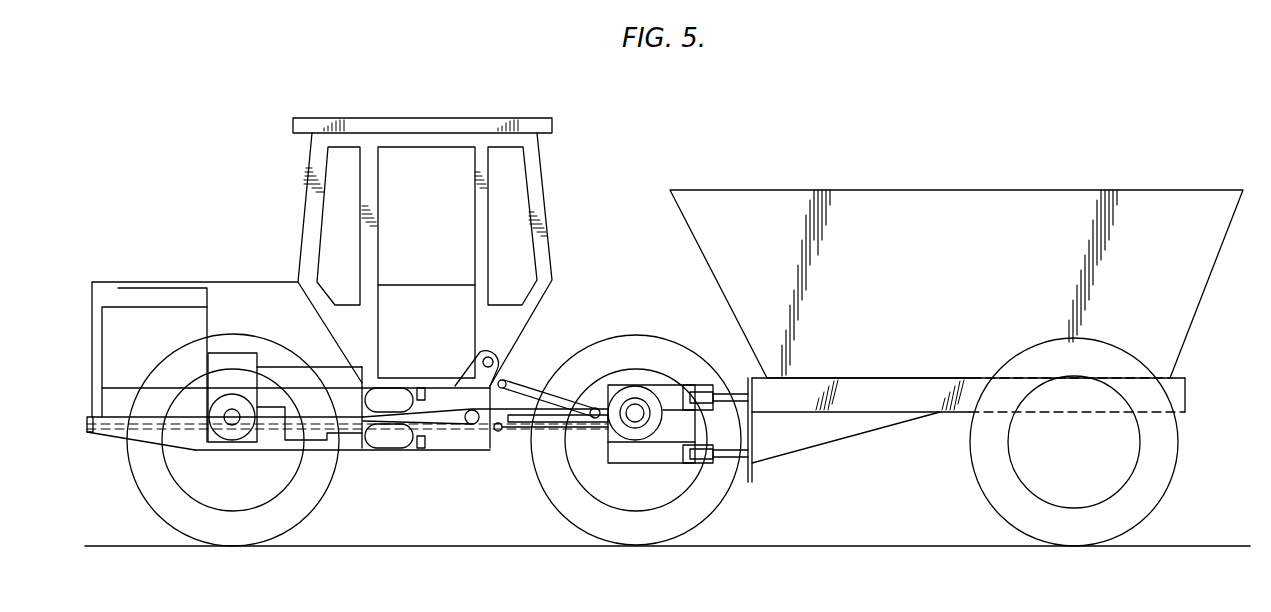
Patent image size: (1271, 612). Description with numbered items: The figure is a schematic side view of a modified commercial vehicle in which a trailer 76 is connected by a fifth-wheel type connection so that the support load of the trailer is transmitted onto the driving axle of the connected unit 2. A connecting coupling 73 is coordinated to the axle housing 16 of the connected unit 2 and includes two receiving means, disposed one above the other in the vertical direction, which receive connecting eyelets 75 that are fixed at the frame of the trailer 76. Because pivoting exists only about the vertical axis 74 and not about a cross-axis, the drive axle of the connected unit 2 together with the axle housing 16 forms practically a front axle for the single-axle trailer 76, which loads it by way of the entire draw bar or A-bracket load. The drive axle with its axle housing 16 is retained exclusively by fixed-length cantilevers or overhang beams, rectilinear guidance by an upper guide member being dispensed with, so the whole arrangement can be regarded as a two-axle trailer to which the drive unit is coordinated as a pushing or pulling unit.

The connected unit 2 is at (628, 358).
The axle housing 16 is at (612, 438).
The connecting coupling 73 is at (701, 374).
The vertical axis 74 is at (690, 463).
The connecting eyelets 75 is at (742, 399).
The trailer 76 is at (973, 178).